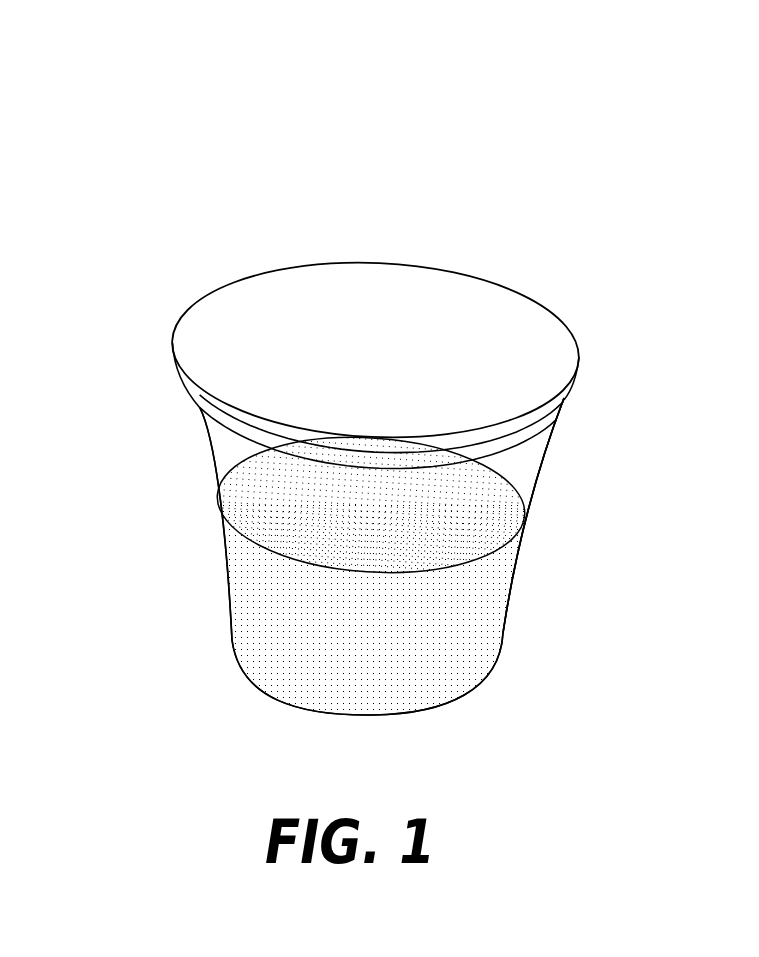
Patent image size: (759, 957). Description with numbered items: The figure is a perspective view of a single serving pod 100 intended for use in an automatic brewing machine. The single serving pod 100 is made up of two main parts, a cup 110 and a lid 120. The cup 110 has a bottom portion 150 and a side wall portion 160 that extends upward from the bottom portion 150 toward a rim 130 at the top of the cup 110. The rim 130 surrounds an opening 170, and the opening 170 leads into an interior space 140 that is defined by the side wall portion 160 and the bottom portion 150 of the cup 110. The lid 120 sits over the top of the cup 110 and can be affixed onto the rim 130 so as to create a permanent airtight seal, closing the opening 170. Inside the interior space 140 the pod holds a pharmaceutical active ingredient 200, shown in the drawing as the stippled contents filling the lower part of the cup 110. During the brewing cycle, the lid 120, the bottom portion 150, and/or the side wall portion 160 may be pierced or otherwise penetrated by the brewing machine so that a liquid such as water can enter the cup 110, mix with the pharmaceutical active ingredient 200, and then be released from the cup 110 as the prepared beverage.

The single serving pod 100 is at (241, 228).
The cup 110 is at (522, 478).
The lid 120 is at (405, 263).
The rim 130 is at (565, 398).
The interior space 140 is at (532, 478).
The bottom portion 150 is at (413, 716).
The side wall portion 160 is at (212, 472).
The opening 170 is at (203, 411).
The pharmaceutical active ingredient 200 is at (473, 611).